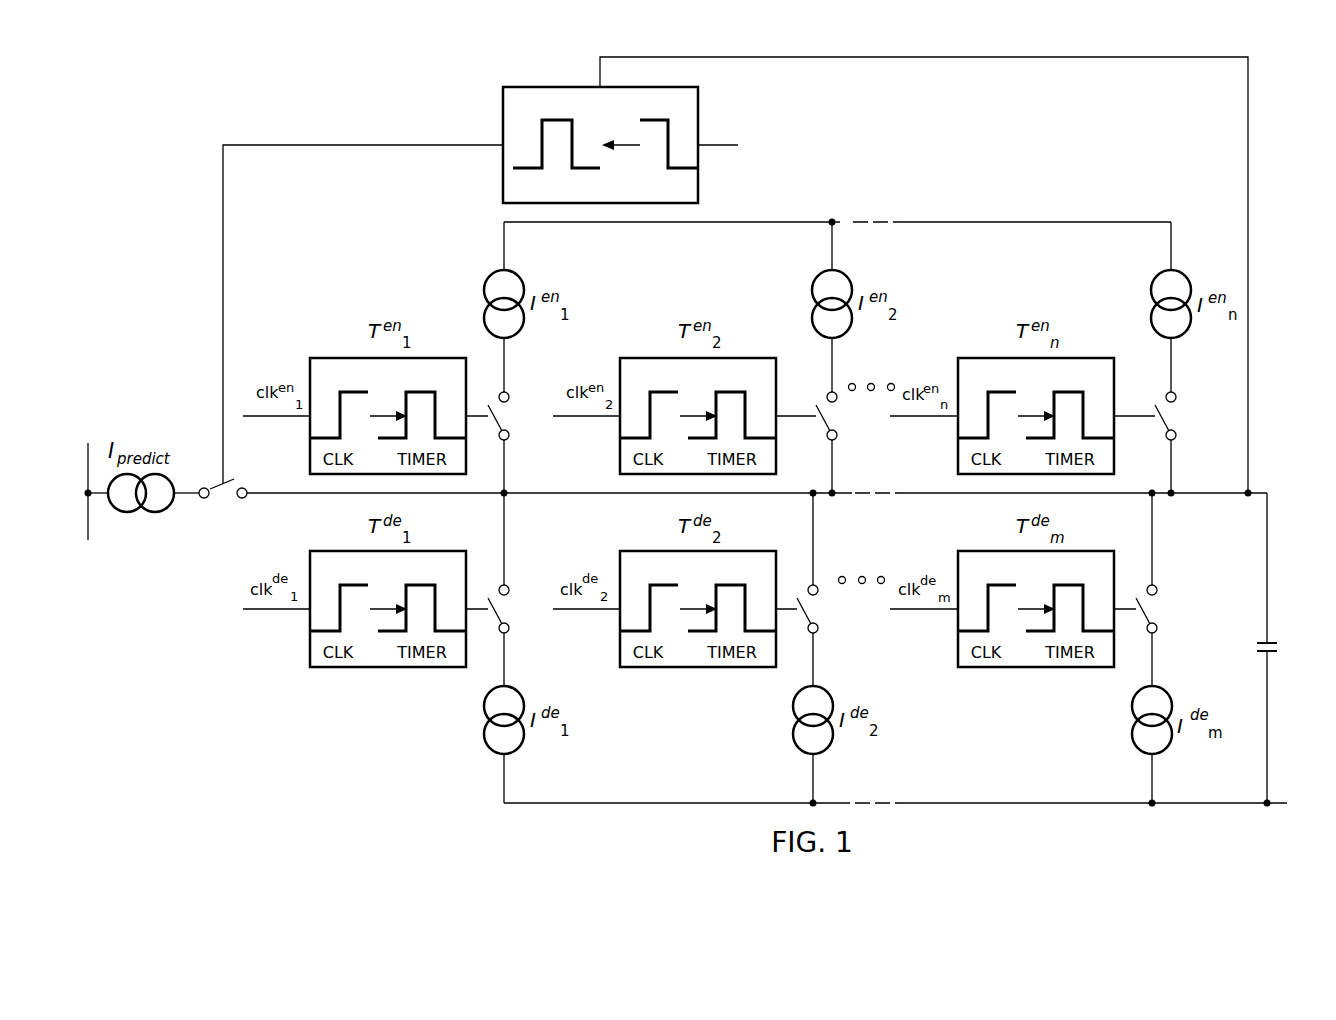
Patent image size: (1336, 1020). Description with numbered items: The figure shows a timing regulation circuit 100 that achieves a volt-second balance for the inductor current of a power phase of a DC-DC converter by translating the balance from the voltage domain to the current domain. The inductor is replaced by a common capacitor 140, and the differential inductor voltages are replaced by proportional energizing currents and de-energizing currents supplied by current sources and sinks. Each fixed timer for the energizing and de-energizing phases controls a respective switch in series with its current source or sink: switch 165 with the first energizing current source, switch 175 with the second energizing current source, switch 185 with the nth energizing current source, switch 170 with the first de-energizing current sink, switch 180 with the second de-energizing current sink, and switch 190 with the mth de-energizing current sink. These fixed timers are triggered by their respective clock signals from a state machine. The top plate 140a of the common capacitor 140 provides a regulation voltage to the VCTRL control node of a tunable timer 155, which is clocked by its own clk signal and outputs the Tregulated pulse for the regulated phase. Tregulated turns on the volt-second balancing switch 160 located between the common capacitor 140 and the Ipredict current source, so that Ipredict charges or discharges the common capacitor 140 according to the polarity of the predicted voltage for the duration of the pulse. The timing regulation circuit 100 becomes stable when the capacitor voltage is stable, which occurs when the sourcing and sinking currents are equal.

The timing regulation circuit 100 is at (170, 122).
The tunable timer 155 is at (495, 107).
The volt-second balancing switch 160 is at (214, 498).
The switch 165 is at (509, 423).
The switch 170 is at (509, 616).
The switch 175 is at (837, 423).
The switch 180 is at (818, 616).
The switch 185 is at (1176, 423).
The switch 190 is at (1157, 616).
The common capacitor 140 is at (1286, 670).
The top plate 140a is at (1262, 642).